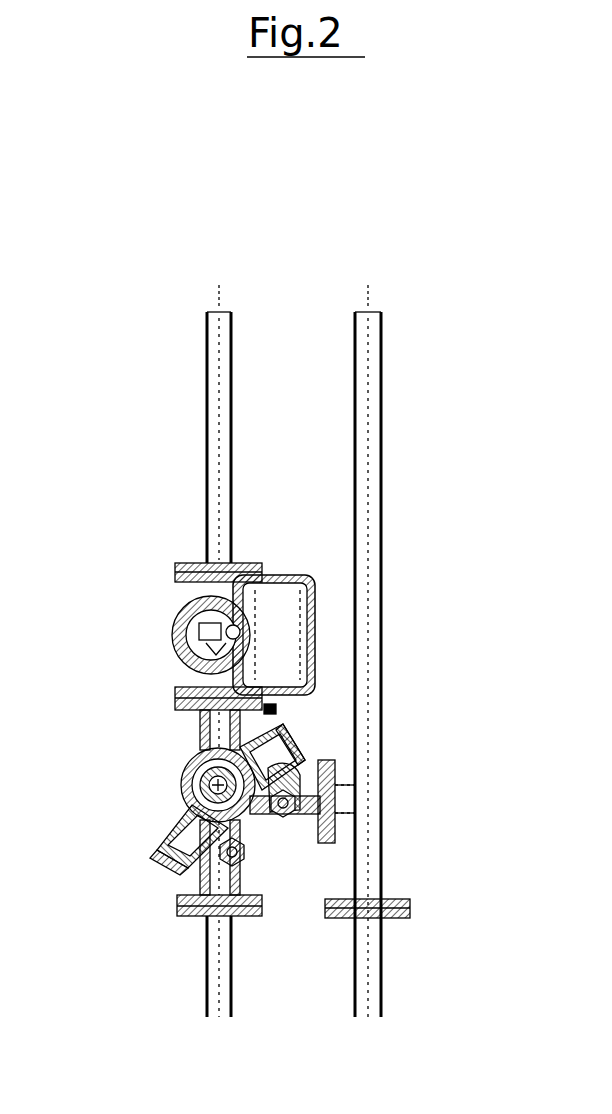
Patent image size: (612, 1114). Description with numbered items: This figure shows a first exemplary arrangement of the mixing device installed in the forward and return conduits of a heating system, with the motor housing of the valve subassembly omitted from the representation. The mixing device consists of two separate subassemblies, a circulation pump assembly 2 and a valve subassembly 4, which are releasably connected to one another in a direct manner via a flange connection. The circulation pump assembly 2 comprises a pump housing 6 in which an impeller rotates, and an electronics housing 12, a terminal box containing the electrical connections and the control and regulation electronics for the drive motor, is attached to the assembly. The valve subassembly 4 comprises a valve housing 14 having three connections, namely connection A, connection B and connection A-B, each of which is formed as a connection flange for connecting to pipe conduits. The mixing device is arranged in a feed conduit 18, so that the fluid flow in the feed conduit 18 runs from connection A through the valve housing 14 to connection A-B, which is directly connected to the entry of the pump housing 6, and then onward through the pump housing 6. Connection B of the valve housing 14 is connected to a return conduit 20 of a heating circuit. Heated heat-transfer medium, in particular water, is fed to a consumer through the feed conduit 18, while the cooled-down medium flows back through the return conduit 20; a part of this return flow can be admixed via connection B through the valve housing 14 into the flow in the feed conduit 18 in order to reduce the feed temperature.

The circulation pump assembly 2 is at (163, 634).
The valve subassembly 4 is at (183, 813).
The pump housing 6 is at (194, 634).
The electronics housing 12 is at (297, 658).
The valve housing 14 is at (169, 738).
The feed conduit 18 is at (207, 352).
The return conduit 20 is at (381, 460).
The connection A is at (177, 900).
The connection B is at (335, 780).
The connection A-B is at (276, 710).